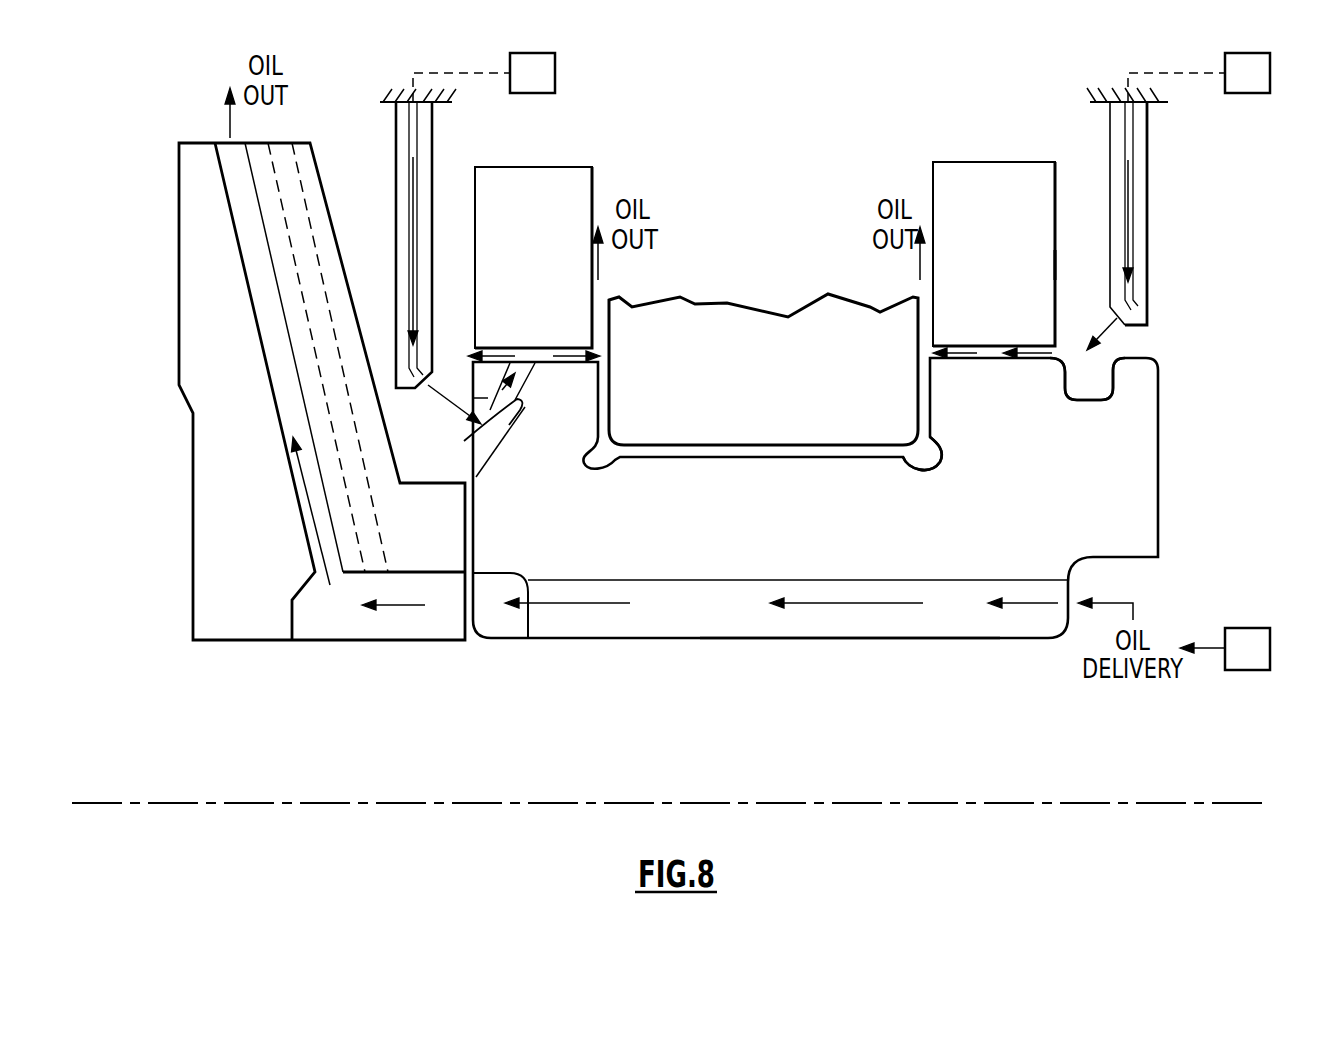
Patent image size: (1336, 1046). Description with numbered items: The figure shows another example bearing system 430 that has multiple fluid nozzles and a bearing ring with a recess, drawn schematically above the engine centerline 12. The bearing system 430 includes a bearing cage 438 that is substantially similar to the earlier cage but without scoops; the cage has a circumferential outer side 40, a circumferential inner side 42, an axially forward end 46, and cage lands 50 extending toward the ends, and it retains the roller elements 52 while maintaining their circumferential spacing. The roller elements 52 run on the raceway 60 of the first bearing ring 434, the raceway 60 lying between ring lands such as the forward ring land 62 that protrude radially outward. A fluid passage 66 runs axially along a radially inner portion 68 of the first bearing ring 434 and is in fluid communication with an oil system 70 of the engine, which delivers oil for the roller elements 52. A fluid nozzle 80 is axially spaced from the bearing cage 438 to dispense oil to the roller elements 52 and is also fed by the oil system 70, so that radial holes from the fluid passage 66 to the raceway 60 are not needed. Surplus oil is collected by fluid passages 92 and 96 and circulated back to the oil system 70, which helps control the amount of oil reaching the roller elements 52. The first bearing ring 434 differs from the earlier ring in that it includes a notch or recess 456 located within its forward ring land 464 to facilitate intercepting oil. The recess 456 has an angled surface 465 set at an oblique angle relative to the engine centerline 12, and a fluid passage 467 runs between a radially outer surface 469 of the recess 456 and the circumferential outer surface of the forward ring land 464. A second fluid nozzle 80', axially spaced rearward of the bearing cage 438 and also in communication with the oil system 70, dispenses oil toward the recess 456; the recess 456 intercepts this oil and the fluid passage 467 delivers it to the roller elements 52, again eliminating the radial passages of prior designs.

The engine centerline 12 is at (118, 803).
The circumferential outer side 40 is at (1003, 162).
The circumferential inner side 42 is at (993, 360).
The axially forward end 46 is at (1070, 211).
The cage lands 50 is at (578, 307).
The roller elements 52 is at (698, 337).
The raceway 60 is at (931, 466).
The forward ring land 62 is at (1040, 380).
The fluid passage 66 is at (880, 618).
The radially inner portion 68 is at (833, 659).
The oil system 70 is at (533, 93).
The fluid nozzle 80 is at (1152, 206).
The second fluid nozzle 80' is at (437, 238).
The fluid passage 92 is at (267, 237).
The fluid passage 96 is at (316, 278).
The bearing system 430 is at (800, 137).
The first bearing ring 434 is at (1160, 472).
The bearing cage 438 is at (1055, 265).
The recess 456 is at (511, 432).
The forward ring land 464 is at (485, 430).
The angled surface 465 is at (495, 447).
The fluid passage 467 is at (522, 386).
The radially outer surface 469 is at (473, 398).